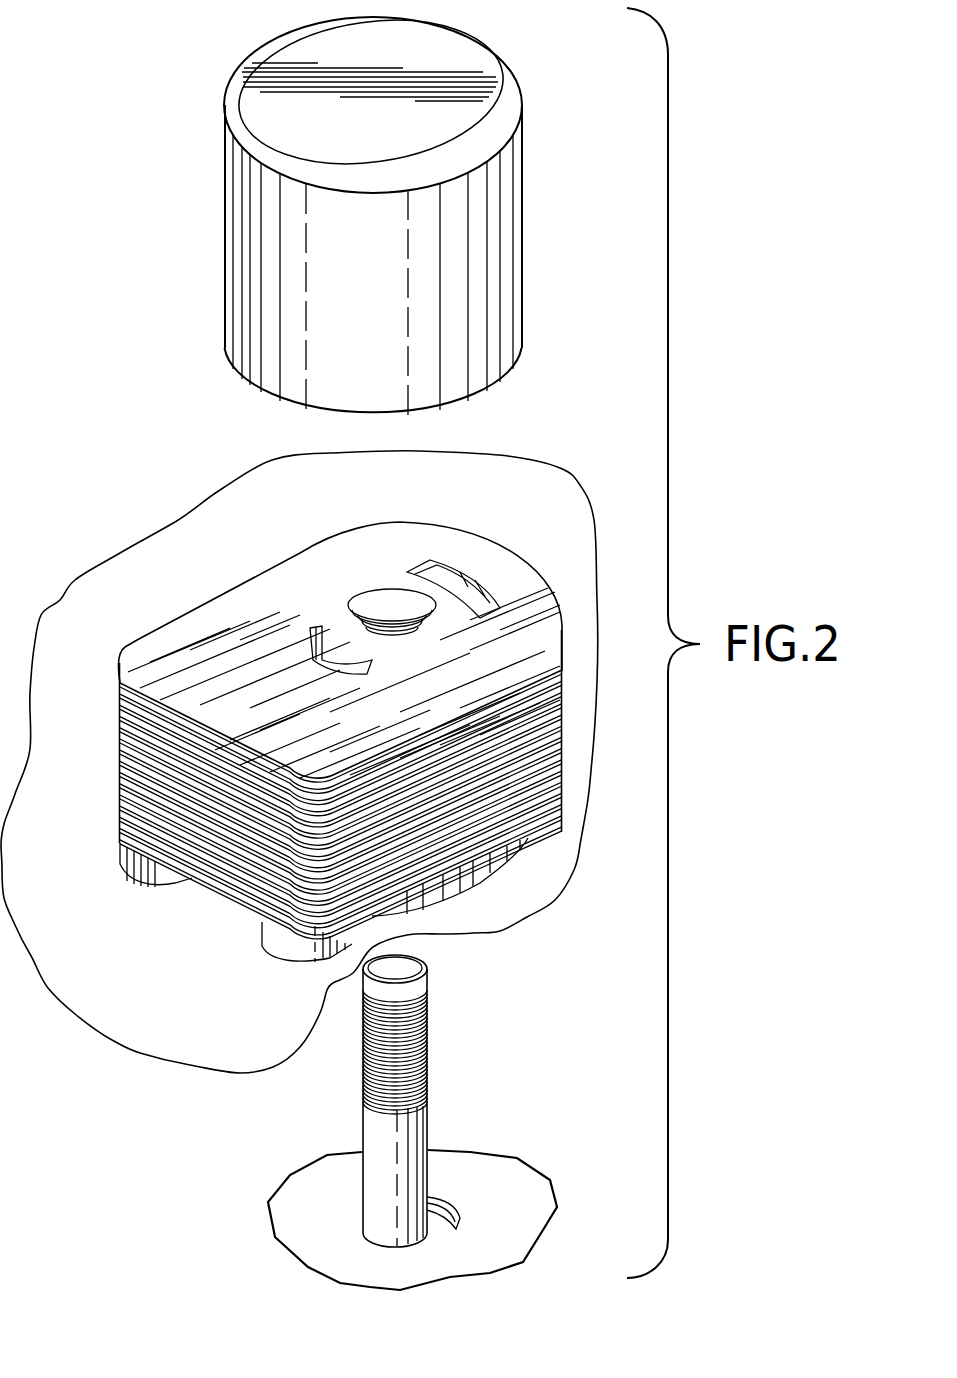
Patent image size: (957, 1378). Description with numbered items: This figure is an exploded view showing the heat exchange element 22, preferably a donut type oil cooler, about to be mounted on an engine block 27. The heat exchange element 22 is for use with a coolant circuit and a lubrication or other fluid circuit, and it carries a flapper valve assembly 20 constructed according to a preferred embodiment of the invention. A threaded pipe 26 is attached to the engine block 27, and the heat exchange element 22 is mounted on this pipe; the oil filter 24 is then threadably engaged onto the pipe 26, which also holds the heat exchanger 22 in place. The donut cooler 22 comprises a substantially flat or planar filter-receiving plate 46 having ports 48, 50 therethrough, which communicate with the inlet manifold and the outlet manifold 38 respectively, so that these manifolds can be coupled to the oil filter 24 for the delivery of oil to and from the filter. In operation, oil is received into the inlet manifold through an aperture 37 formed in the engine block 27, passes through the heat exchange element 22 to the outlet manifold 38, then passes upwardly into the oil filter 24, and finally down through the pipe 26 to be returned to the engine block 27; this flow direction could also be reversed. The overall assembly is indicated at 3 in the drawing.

The oil filter 24 is at (240, 223).
The housing outline 3 is at (172, 522).
The heat exchange element 22 is at (374, 693).
The filter-receiving plate 46 is at (340, 711).
The flapper valve assembly 20 is at (340, 619).
The port 50 is at (287, 625).
The port 48 is at (413, 560).
The outlet manifold 38 is at (318, 633).
The threaded pipe 26 is at (450, 1153).
The engine block 27 is at (434, 1233).
The aperture 37 is at (450, 1207).